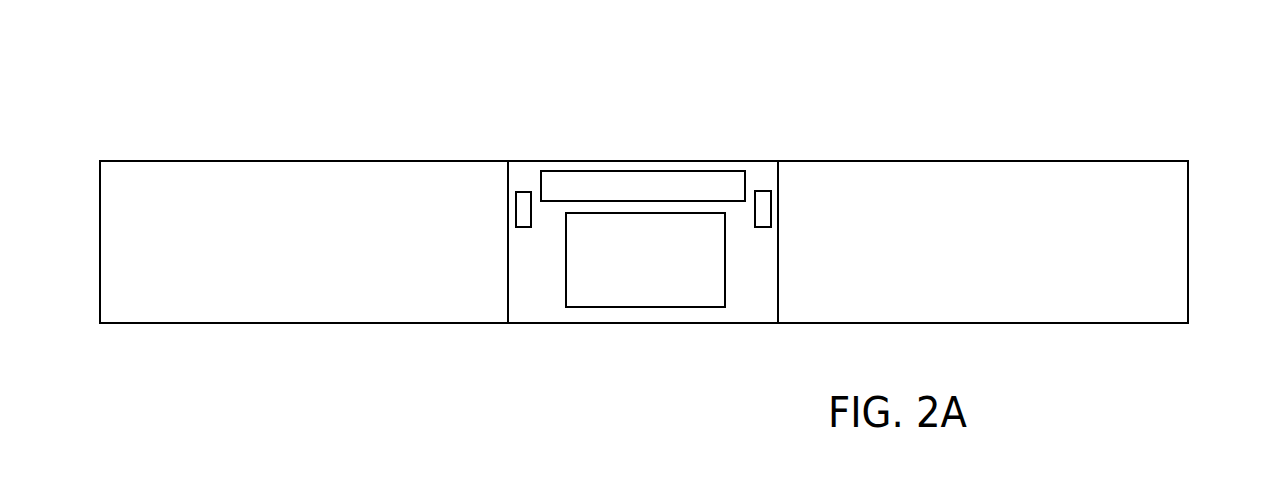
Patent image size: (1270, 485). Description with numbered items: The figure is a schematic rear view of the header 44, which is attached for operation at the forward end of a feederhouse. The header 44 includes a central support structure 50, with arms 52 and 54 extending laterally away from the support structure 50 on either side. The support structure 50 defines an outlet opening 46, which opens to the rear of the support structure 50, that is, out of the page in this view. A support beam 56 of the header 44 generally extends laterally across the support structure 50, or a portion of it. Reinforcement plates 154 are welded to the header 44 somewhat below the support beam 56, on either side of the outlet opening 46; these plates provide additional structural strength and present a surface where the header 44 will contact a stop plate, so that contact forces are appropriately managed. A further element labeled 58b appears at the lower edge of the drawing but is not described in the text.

The header 44 is at (433, 392).
The outlet opening 46 is at (677, 308).
The central support structure 50 is at (643, 161).
The arm 52 is at (286, 161).
The arm 54 is at (983, 160).
The support beam 56 is at (558, 171).
The reinforcement plates 154 is at (516, 206).
The hinge 58b is at (505, 484).